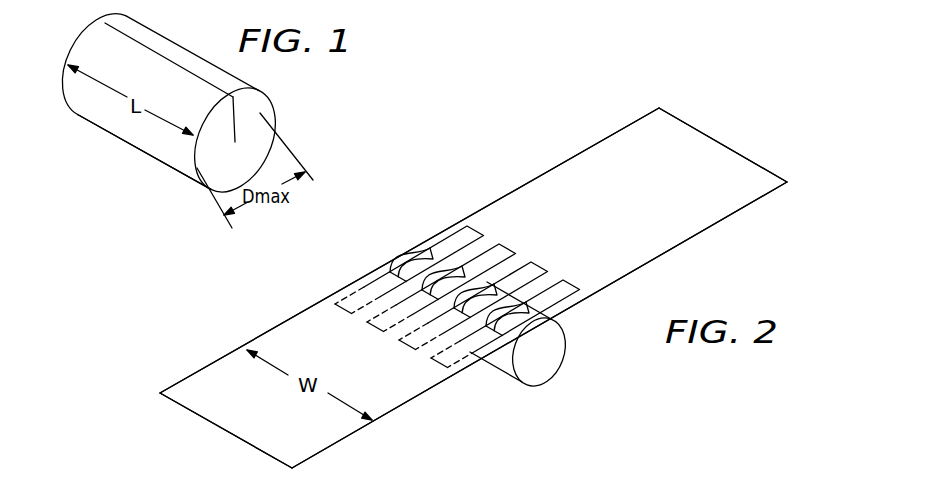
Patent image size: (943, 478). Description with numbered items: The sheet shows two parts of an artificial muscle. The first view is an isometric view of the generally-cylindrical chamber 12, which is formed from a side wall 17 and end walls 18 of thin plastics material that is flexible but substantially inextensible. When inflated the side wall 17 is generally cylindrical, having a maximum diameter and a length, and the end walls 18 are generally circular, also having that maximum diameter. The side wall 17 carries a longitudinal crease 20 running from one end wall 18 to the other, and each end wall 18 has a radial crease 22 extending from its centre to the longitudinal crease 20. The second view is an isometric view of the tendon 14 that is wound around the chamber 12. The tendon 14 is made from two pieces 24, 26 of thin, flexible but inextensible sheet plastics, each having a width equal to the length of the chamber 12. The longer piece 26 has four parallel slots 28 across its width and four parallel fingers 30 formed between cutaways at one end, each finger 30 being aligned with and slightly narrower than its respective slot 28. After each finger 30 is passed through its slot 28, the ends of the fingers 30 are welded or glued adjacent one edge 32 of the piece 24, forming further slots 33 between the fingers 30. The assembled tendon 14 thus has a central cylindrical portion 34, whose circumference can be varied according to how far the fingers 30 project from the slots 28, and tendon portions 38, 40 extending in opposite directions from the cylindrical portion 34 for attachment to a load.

In FIG. 1, the chamber 12 is at (316, 96).
In FIG. 1, the side wall 17 is at (148, 142).
In FIG. 1, the end walls 18 is at (263, 115).
In FIG. 1, the longitudinal crease 20 is at (173, 60).
In FIG. 1, the radial crease 22 is at (233, 118).
In FIG. 2, the tendon 14 is at (606, 384).
In FIG. 2, the piece 24 is at (281, 300).
In FIG. 2, the piece 26 is at (533, 153).
In FIG. 2, the slots 28 is at (465, 238).
In FIG. 2, the fingers 30 is at (393, 280).
In FIG. 2, the edge 32 is at (455, 337).
In FIG. 2, the further slots 33 is at (402, 293).
In FIG. 2, the central cylindrical portion 34 is at (538, 352).
In FIG. 2, the tendon portion 38 is at (240, 392).
In FIG. 2, the tendon portion 40 is at (695, 165).